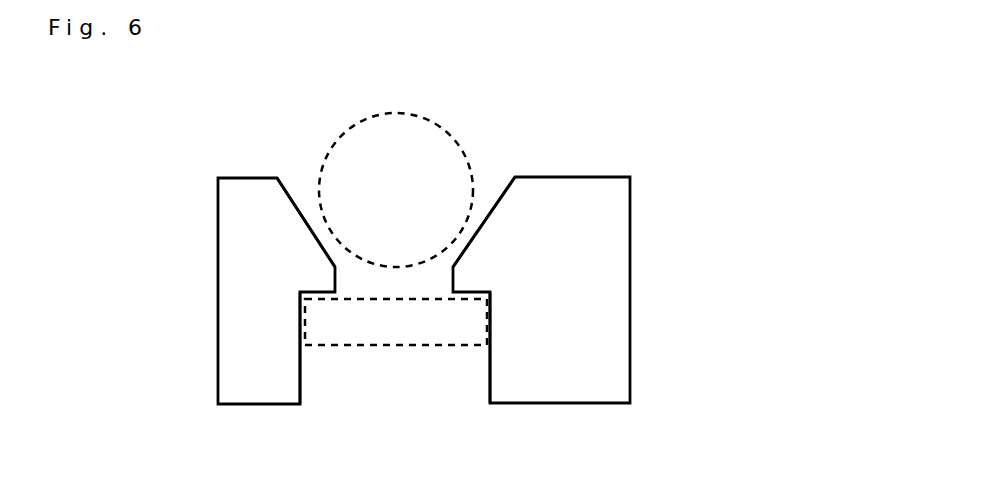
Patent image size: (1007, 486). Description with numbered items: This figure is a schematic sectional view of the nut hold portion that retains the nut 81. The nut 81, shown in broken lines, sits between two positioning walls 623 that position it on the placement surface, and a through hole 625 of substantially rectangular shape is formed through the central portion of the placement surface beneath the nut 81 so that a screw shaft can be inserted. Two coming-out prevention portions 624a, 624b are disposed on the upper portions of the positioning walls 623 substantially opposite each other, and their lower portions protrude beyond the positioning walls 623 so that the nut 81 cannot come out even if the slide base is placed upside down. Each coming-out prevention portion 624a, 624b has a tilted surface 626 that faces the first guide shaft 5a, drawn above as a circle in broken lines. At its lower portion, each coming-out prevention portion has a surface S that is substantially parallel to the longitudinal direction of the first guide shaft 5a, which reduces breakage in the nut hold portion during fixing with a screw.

The first guide shaft 5a is at (395, 115).
The tilted surface 626 is at (289, 197).
The coming-out prevention portion 624b is at (303, 243).
The coming-out prevention portion 624a is at (472, 250).
The surface S is at (450, 280).
The nut 81 is at (412, 345).
The positioning wall 623 is at (322, 372).
The through hole 625 is at (393, 395).